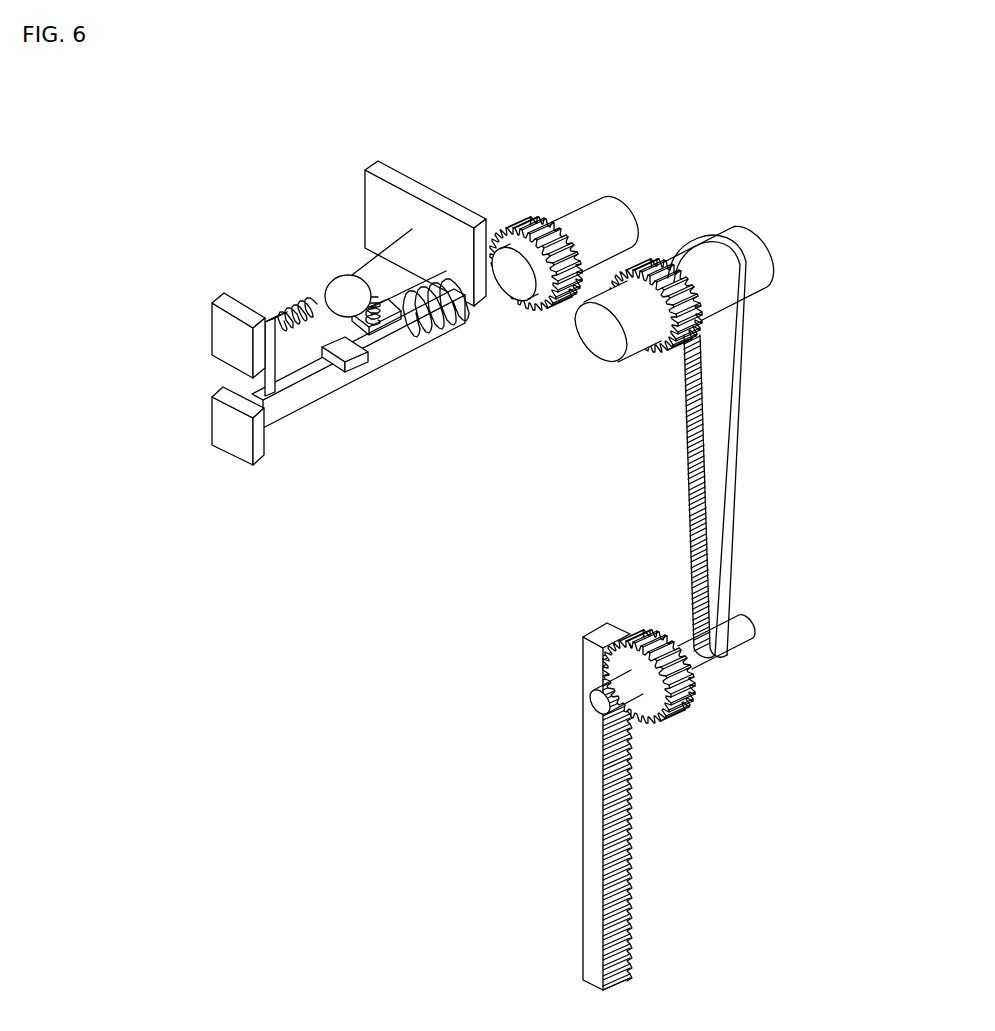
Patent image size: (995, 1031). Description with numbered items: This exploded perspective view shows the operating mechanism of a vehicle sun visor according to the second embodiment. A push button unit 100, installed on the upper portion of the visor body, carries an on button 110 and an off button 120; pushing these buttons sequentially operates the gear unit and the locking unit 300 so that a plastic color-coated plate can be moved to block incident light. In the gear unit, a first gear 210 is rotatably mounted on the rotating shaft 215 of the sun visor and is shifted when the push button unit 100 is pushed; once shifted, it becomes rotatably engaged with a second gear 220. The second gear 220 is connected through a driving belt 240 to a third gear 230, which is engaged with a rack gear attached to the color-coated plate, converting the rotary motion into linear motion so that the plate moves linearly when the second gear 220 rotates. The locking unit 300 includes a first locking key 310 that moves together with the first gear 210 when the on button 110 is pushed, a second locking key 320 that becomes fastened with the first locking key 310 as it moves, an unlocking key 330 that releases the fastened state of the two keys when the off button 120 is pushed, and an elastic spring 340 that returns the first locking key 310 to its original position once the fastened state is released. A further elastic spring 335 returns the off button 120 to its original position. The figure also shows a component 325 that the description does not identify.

The push button unit 100 is at (161, 409).
The on button 110 is at (235, 442).
The off button 120 is at (232, 347).
The first gear 210 is at (536, 212).
The rotating shaft 215 is at (607, 205).
The second gear 220 is at (654, 258).
The third gear 230 is at (680, 690).
The driving belt 240 is at (735, 440).
The locking unit 300 is at (386, 327).
The first locking key 310 is at (352, 356).
The second locking key 320 is at (396, 330).
The guide shaft 325 is at (353, 275).
The unlocking key 330 is at (293, 378).
The elastic spring 335 is at (290, 303).
The elastic spring 340 is at (455, 325).